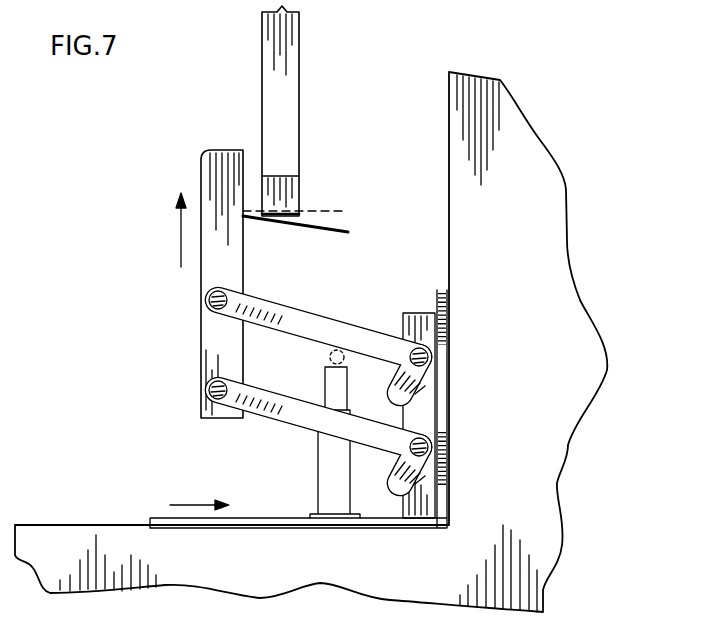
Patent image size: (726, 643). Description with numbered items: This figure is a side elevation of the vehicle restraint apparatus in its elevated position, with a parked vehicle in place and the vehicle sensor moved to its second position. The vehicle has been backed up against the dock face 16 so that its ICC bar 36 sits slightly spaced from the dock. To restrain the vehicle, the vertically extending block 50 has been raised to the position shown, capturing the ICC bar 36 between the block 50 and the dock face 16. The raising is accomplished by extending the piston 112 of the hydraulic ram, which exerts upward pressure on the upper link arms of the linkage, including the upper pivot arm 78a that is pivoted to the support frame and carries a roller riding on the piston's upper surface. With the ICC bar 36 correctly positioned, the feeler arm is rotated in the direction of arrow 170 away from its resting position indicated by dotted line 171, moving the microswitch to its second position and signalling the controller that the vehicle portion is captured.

The dock face 16 is at (449, 122).
The ICC bar 36 is at (278, 184).
The vertically extending block 50 is at (217, 262).
The upper pivot arm 78a is at (283, 333).
The piston 112 is at (340, 393).
The arrow indicating feeler arm rotation direction 170 is at (355, 241).
The dotted line indicating resting position 171 is at (325, 208).